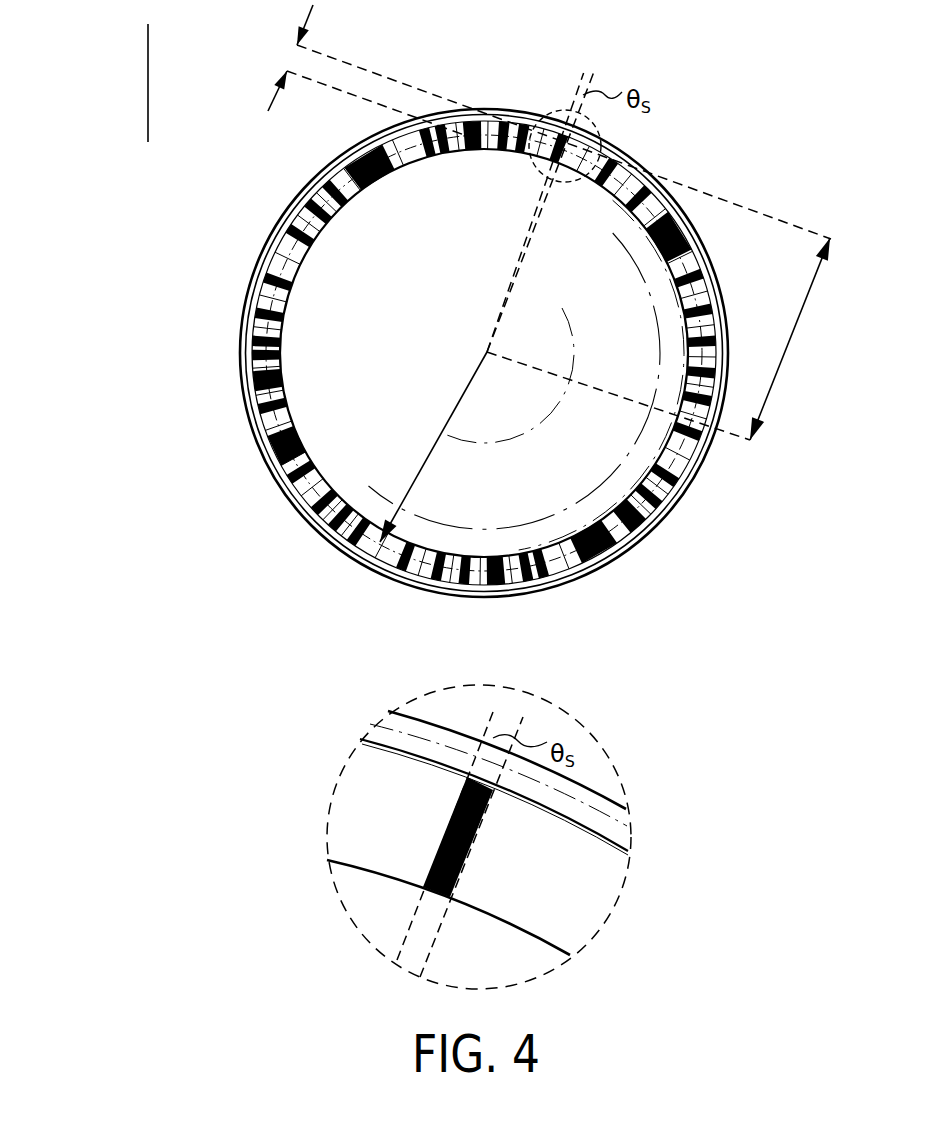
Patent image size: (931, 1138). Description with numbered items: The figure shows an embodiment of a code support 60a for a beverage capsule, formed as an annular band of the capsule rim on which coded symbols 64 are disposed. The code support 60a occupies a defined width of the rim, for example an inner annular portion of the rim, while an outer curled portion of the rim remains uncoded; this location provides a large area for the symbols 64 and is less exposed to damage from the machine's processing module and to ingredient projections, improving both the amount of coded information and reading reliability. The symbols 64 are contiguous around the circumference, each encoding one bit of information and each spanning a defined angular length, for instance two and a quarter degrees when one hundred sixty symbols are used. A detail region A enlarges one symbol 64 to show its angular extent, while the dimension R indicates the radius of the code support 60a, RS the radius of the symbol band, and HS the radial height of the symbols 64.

The code support 60a is at (148, 84).
The symbols 64 is at (305, 242).
The detail view A is at (572, 110).
The ring radius R is at (433, 447).
The segment radius RS is at (658, 339).
The segment height HS is at (544, 122).